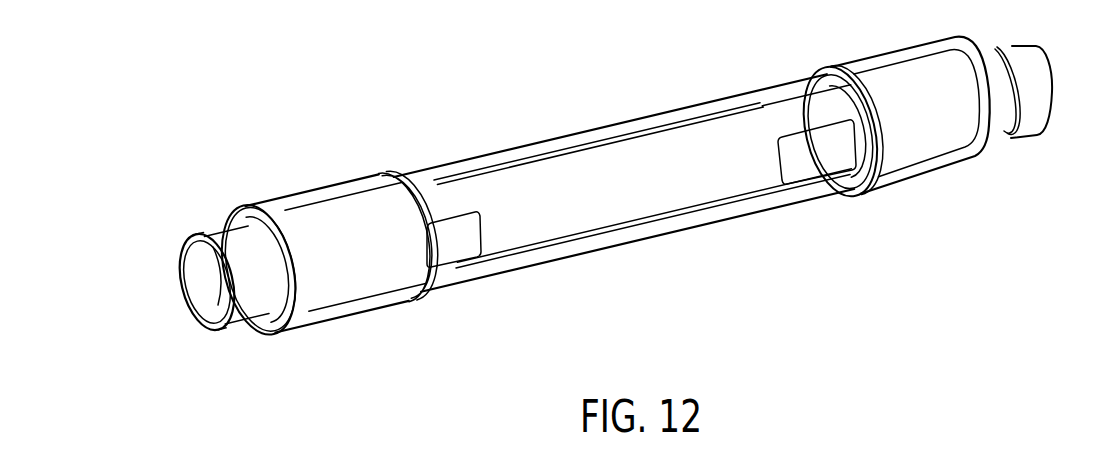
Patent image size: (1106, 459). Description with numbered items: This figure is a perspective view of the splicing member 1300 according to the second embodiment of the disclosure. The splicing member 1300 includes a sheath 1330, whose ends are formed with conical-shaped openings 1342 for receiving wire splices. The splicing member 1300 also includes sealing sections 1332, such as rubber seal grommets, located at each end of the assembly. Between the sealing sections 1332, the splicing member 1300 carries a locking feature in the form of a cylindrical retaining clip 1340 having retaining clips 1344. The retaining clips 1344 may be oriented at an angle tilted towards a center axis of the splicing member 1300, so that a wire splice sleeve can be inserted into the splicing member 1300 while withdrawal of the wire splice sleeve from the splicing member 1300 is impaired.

The splicing member 1300 is at (238, 166).
The sheath 1330 is at (320, 182).
The sealing sections 1332 is at (355, 303).
The cylindrical retaining clip 1340 is at (597, 220).
The conical-shaped openings 1342 is at (207, 303).
The retaining clips 1344 is at (453, 252).